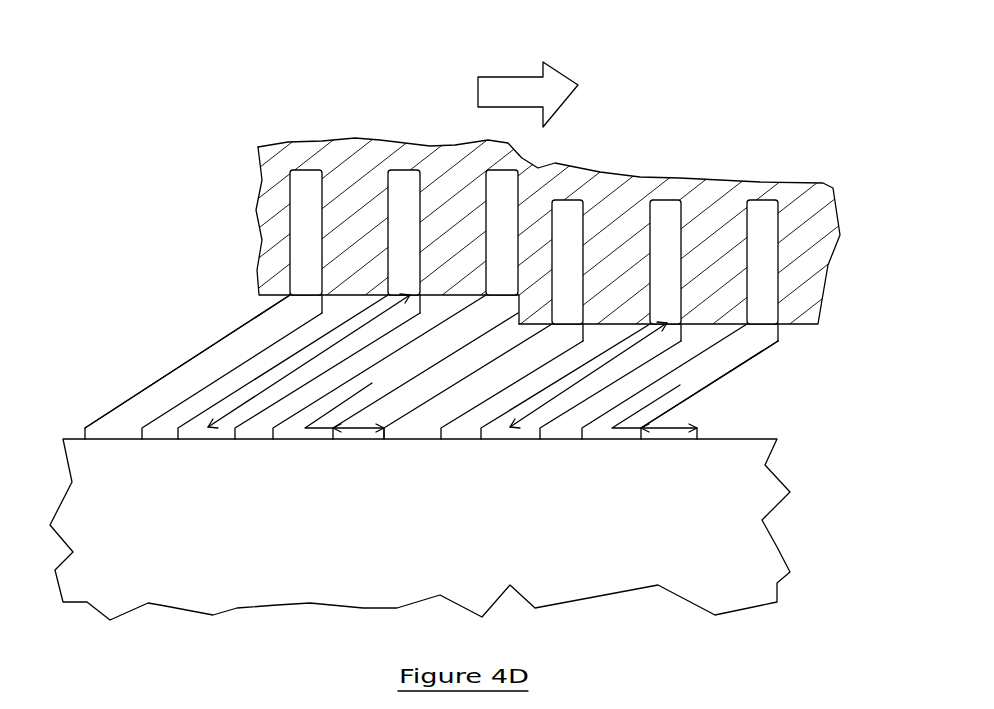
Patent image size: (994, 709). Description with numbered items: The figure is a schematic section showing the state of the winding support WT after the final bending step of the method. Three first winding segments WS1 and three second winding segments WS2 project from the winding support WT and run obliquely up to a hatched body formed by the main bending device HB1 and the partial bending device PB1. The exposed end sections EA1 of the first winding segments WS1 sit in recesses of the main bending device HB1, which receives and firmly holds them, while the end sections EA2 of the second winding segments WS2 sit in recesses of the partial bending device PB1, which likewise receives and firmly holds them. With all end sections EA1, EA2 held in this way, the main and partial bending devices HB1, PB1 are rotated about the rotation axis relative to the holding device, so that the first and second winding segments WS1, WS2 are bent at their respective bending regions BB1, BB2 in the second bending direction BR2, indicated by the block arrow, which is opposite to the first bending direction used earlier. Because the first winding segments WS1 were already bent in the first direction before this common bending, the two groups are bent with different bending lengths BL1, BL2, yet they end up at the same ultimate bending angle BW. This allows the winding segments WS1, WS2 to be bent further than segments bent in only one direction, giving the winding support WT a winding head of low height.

The winding support WT is at (748, 513).
The partial bending device PB1 is at (280, 217).
The main bending device HB1 is at (802, 272).
The end sections of the second winding segments EA2 is at (312, 183).
The end sections of the first winding segments EA1 is at (563, 211).
The bending region of the second winding segments BB2 is at (215, 359).
The bending region of the first winding segments BB1 is at (697, 375).
The second winding segments WS2 is at (136, 409).
The first winding segments WS1 is at (753, 340).
The bending angle BW is at (515, 417).
The bending length of the second winding segments BL2 is at (309, 361).
The bending length of the first winding segments BL1 is at (588, 375).
The second bending direction BR2 is at (558, 92).